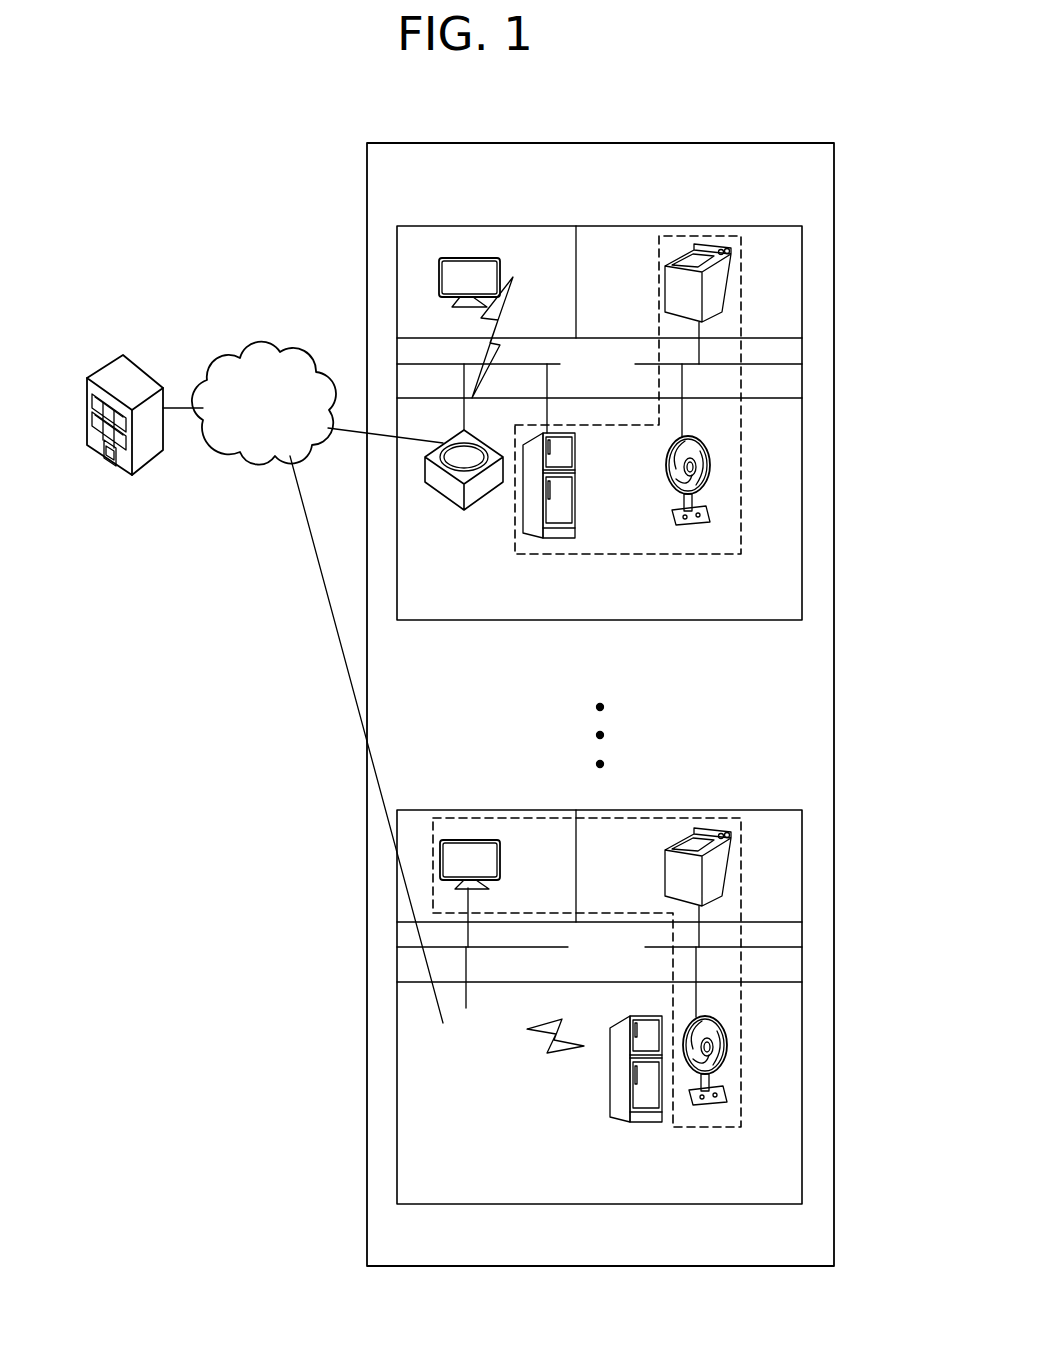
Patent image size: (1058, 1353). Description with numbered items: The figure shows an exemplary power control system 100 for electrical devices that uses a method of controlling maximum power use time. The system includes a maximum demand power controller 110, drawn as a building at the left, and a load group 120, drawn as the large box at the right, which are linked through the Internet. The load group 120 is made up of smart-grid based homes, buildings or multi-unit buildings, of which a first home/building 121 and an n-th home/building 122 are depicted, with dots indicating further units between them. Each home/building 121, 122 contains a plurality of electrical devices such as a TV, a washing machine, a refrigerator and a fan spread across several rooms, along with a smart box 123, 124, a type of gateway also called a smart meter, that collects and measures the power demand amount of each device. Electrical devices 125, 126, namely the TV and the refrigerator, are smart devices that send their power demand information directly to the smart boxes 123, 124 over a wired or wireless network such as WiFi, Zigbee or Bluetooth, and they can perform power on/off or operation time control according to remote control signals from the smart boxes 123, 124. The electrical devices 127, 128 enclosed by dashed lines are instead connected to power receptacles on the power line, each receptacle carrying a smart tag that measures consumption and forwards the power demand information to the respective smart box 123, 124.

The power control system 100 is at (260, 200).
The maximum demand power controller 110 is at (126, 357).
The load group 120 is at (633, 142).
The home/building/multi-unit building 121 is at (770, 225).
The home/building/multi-unit building 122 is at (771, 809).
The smart box 123 is at (451, 500).
The smart box 124 is at (587, 996).
The electrical device 125 is at (467, 257).
The electrical device 126 is at (636, 1124).
The electrical devices 127 is at (633, 556).
The electrical devices 128 is at (704, 1129).